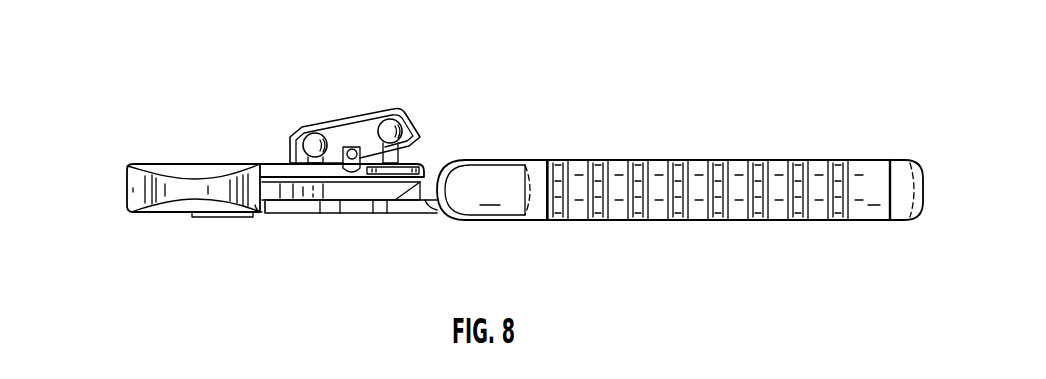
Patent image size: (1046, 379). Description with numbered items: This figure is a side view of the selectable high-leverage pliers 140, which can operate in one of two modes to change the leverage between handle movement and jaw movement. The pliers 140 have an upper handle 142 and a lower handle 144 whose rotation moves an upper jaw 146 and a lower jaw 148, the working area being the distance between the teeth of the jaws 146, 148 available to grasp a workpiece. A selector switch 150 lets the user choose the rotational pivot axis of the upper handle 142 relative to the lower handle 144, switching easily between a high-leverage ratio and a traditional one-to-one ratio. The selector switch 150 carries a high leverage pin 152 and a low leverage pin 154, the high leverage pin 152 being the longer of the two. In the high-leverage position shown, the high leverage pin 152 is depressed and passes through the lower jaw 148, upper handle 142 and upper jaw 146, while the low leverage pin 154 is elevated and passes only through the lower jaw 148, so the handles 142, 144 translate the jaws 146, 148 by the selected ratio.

The selectable high-leverage pliers 140 is at (765, 96).
The upper handle 142 is at (415, 188).
The lower handle 144 is at (772, 222).
The upper jaw 146 is at (327, 211).
The lower jaw 148 is at (138, 214).
The selector switch 150 is at (355, 128).
The high leverage pin 152 is at (310, 140).
The low leverage pin 154 is at (399, 115).